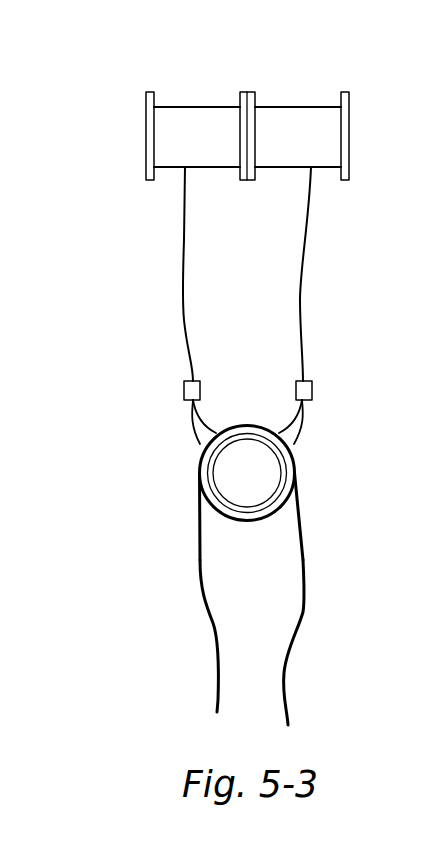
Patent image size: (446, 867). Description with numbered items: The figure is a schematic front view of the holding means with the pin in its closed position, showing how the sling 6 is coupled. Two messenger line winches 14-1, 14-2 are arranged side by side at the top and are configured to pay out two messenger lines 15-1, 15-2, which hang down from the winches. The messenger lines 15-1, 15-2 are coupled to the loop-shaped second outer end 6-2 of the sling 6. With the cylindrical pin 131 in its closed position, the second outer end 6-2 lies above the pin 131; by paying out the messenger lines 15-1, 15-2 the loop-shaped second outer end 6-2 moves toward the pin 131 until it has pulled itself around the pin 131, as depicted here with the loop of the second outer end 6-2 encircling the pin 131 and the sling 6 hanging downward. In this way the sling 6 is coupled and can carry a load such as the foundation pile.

The messenger line winch 14-1 is at (197, 123).
The messenger line winch 14-2 is at (298, 123).
The messenger line 15-1 is at (183, 262).
The messenger line 15-2 is at (305, 262).
The cylindrical pin 131 is at (248, 457).
The second outer end of the sling 6-2 is at (197, 475).
The sling 6 is at (200, 653).